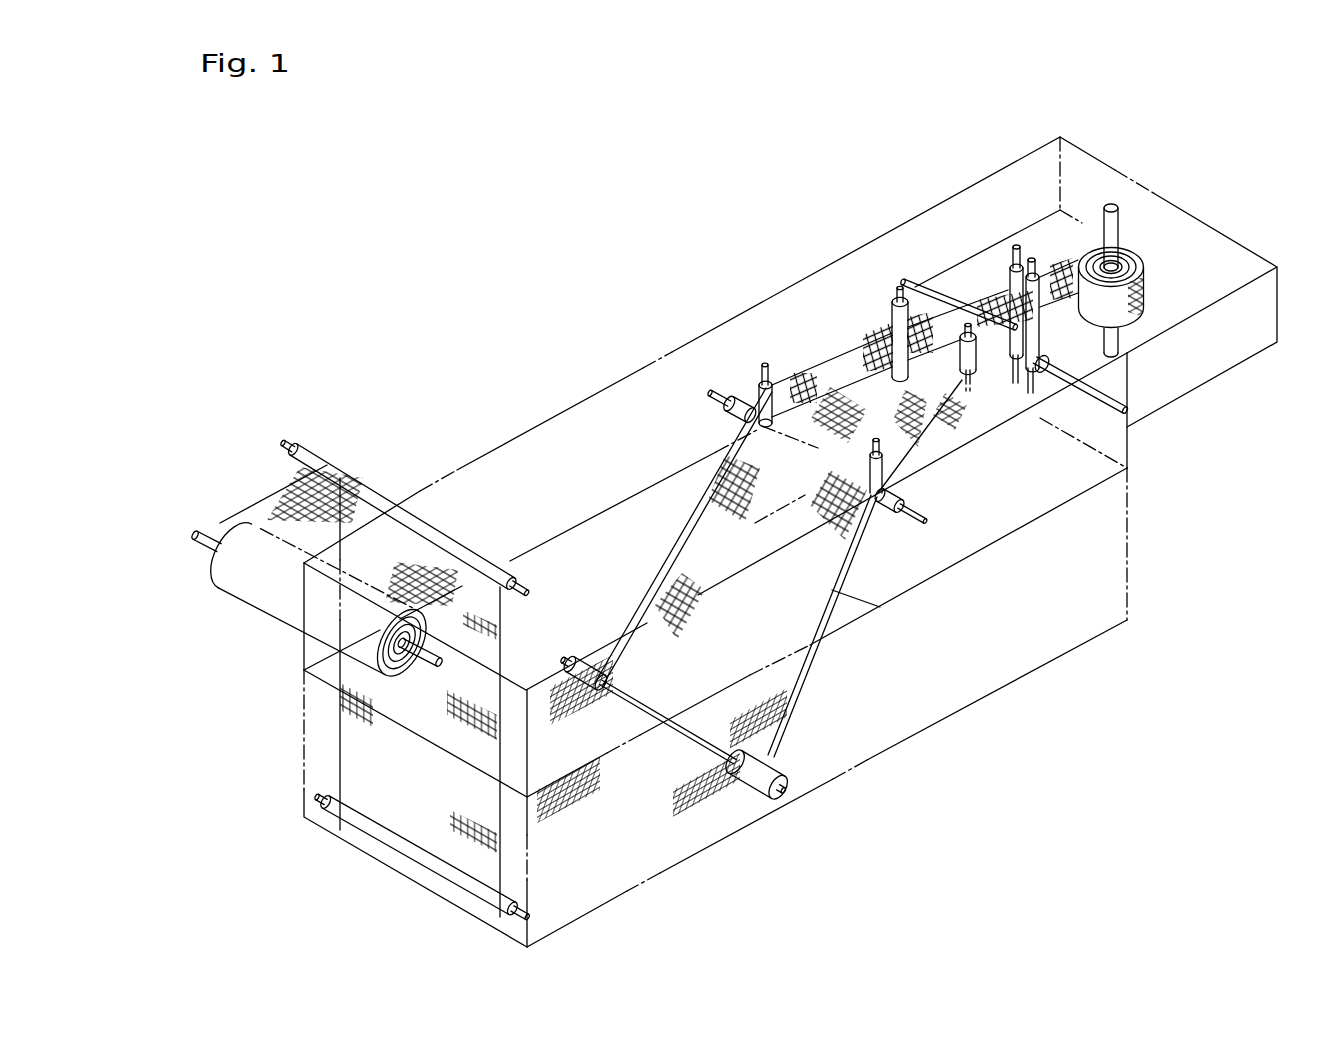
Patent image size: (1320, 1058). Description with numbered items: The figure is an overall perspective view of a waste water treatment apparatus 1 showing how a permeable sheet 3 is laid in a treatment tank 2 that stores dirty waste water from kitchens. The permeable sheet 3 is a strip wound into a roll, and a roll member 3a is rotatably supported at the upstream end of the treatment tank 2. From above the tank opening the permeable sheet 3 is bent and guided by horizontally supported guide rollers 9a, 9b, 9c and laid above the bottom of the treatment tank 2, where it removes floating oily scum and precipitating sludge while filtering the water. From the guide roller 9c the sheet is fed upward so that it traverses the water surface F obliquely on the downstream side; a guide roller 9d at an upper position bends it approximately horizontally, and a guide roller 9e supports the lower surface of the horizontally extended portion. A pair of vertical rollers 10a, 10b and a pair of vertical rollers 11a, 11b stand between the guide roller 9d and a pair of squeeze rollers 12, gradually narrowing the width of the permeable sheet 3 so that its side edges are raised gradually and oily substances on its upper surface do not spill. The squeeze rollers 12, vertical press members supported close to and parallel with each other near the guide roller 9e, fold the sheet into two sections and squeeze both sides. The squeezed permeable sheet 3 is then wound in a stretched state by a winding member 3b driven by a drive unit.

The waste water treatment apparatus 1 is at (648, 364).
The treatment tank 2 is at (677, 352).
The permeable sheet 3 is at (705, 552).
The roll member 3a is at (233, 540).
The winding member 3b is at (1123, 247).
The guide roller 9a is at (305, 450).
The guide roller 9b is at (320, 795).
The guide roller 9c is at (775, 762).
The guide roller 9d is at (893, 512).
The guide roller 9e is at (1035, 362).
The vertical roller 10a is at (773, 397).
The vertical roller 10b is at (898, 466).
The vertical roller 11a is at (890, 307).
The vertical roller 11b is at (1027, 355).
The squeeze rollers 12 is at (1020, 240).
The water surface F is at (588, 513).